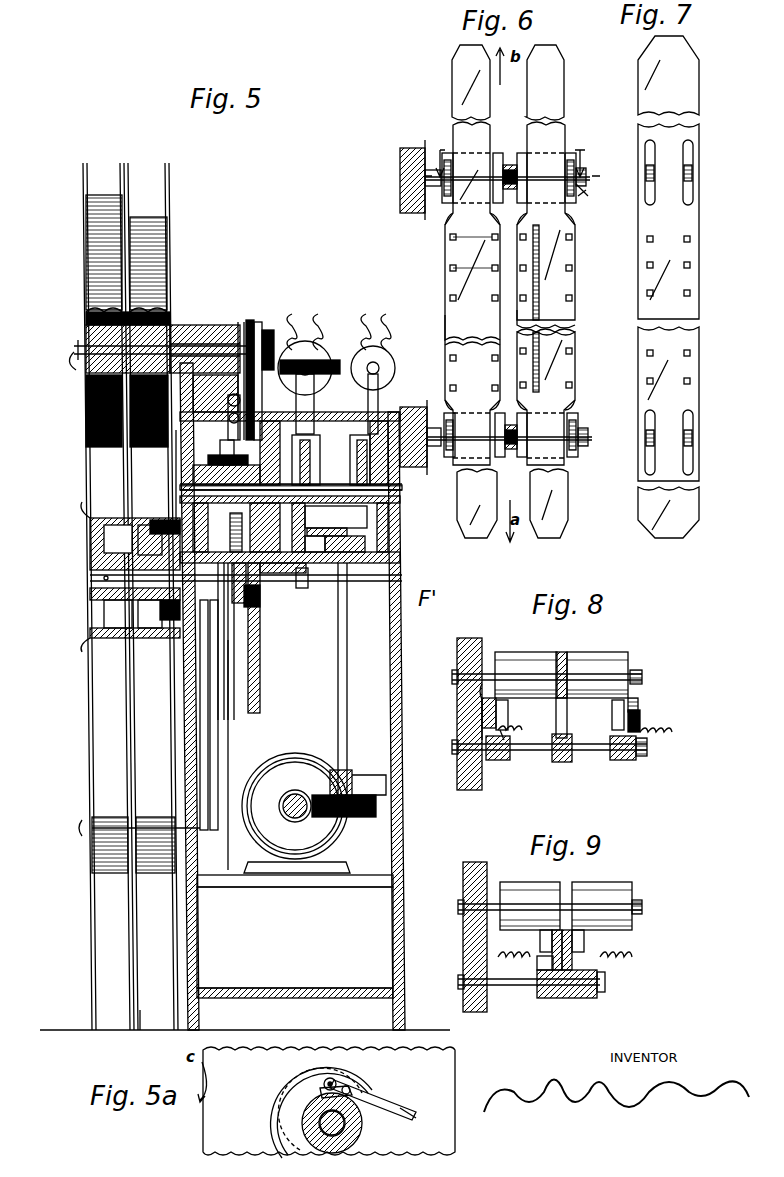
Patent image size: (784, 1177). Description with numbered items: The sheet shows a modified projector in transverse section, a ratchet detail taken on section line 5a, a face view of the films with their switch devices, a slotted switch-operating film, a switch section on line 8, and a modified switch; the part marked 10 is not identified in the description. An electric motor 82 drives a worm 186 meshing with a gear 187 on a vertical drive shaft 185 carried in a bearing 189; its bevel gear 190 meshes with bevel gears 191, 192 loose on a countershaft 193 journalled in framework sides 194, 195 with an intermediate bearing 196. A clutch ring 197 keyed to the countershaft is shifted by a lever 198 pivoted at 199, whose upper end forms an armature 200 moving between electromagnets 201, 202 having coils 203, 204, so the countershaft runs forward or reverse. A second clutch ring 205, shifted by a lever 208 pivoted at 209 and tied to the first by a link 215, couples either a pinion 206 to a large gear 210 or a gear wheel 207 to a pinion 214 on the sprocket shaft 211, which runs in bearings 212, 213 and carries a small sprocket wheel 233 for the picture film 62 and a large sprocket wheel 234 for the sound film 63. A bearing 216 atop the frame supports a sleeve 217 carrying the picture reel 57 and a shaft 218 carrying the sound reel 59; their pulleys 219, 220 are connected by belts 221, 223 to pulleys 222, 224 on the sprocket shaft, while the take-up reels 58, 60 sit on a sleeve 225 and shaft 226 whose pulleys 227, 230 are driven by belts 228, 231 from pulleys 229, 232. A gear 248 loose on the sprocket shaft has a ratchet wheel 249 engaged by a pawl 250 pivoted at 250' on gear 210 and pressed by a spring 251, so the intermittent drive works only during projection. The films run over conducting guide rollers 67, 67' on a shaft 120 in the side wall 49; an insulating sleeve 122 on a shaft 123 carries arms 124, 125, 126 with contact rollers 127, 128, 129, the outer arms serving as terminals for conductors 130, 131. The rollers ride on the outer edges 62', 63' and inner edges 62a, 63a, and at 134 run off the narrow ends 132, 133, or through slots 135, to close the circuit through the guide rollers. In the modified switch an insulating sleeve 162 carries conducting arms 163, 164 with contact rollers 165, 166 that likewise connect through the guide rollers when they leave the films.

In FIG. 5, the section line 5a is at (258, 634).
In FIG. 6, the section line 8 is at (512, 155).
In FIG. 5, the frame plate 10 is at (178, 444).
In FIG. 6, the side wall 49 is at (400, 148).
In FIG. 8, the side wall 49 is at (458, 638).
In FIG. 9, the side wall 49 is at (463, 870).
In FIG. 5, the picture reel 57 is at (170, 200).
In FIG. 5, the take-up picture reel 58 is at (170, 1010).
In FIG. 5, the sound reel 59 is at (84, 181).
In FIG. 5, the take-up sound reel 60 is at (93, 952).
In FIG. 5, the picture film 62 is at (164, 332).
In FIG. 6, the picture film 62 is at (456, 293).
In FIG. 8, the picture film 62 is at (518, 720).
In FIG. 9, the picture film 62 is at (526, 950).
In FIG. 6, the inner edge of picture film 62a is at (424, 312).
In FIG. 6, the outer edge of picture film 62' is at (460, 345).
In FIG. 5, the sound film 63 is at (82, 321).
In FIG. 6, the sound film 63 is at (562, 293).
In FIG. 8, the sound film 63 is at (607, 715).
In FIG. 9, the sound film 63 is at (625, 943).
In FIG. 6, the outer edge of sound film 63' is at (564, 309).
In FIG. 6, the inner edge of sound film 63a is at (572, 340).
In FIG. 6, the guide rollers 67 is at (433, 285).
In FIG. 8, the guide rollers 67 is at (526, 665).
In FIG. 9, the guide rollers 67 is at (550, 896).
In FIG. 6, the guide rollers 67' is at (594, 287).
In FIG. 8, the guide rollers 67' is at (597, 665).
In FIG. 9, the guide rollers 67' is at (618, 892).
In FIG. 5, the electric motor 82 is at (296, 813).
In FIG. 6, the shaft 120 is at (402, 178).
In FIG. 8, the shaft 120 is at (460, 672).
In FIG. 8, the insulating sleeve 122 is at (618, 760).
In FIG. 8, the shaft 123 is at (470, 744).
In FIG. 9, the shaft 123 is at (574, 998).
In FIG. 6, the outer arm 124 is at (425, 170).
In FIG. 8, the outer arm 124 is at (482, 706).
In FIG. 6, the middle arm 125 is at (504, 153).
In FIG. 8, the middle arm 125 is at (562, 698).
In FIG. 6, the outer arm 126 is at (580, 168).
In FIG. 8, the outer arm 126 is at (640, 714).
In FIG. 6, the contact roller 127 is at (440, 186).
In FIG. 8, the contact roller 127 is at (480, 690).
In FIG. 6, the contact rollers 128 is at (512, 184).
In FIG. 8, the contact rollers 128 is at (556, 762).
In FIG. 6, the contact roller 129 is at (580, 420).
In FIG. 8, the contact roller 129 is at (640, 700).
In FIG. 8, the conductor 130 is at (500, 760).
In FIG. 8, the conductor 131 is at (672, 732).
In FIG. 6, the narrow end portion 132 is at (548, 532).
In FIG. 6, the narrow end portion 133 is at (462, 82).
In FIG. 6, the film edge shoulder 134 is at (445, 222).
In FIG. 7, the longitudinal slots 135 is at (655, 150).
In FIG. 9, the insulating sleeve 162 is at (562, 998).
In FIG. 9, the conducting switch arm 163 is at (598, 960).
In FIG. 9, the conducting switch arm 164 is at (540, 970).
In FIG. 9, the contact roller 165 is at (578, 930).
In FIG. 9, the contact roller 166 is at (548, 930).
In FIG. 5, the vertical drive shaft 185 is at (347, 679).
In FIG. 5, the worm 186 is at (298, 790).
In FIG. 5, the gear 187 is at (376, 808).
In FIG. 5, the bearing 189 is at (352, 770).
In FIG. 5, the bevel gear 190 is at (390, 540).
In FIG. 5, the bevel gear 191 is at (307, 452).
In FIG. 5, the bevel gear 192 is at (367, 514).
In FIG. 5, the countershaft 193 is at (180, 487).
In FIG. 5, the framework side 194 is at (198, 960).
In FIG. 5, the framework side 195 is at (392, 944).
In FIG. 5, the intermediate bearing 196 is at (280, 532).
In FIG. 5, the clutch ring 197 is at (336, 521).
In FIG. 5, the lever 198 is at (350, 445).
In FIG. 5, the pivot 199 is at (378, 396).
In FIG. 5, the magnetic armature 200 is at (312, 356).
In FIG. 5, the electromagnet 201 is at (388, 370).
In FIG. 5, the electromagnet 202 is at (310, 360).
In FIG. 5, the coil 203 is at (382, 346).
In FIG. 5, the coil 204 is at (296, 314).
In FIG. 5, the second clutch ring 205 is at (222, 460).
In FIG. 5, the pinion 206 is at (176, 522).
In FIG. 5, the gear wheel 207 is at (300, 572).
In FIG. 5, the lever 208 is at (228, 400).
In FIG. 5, the pivot 209 is at (215, 393).
In FIG. 5, the large gear 210 is at (234, 665).
In FIG. 5, the sprocket shaft 211 is at (90, 579).
In FIG. 5A, the sprocket shaft 211 is at (300, 1130).
In FIG. 5, the bearing 212 is at (100, 536).
In FIG. 5, the bearing 213 is at (307, 585).
In FIG. 5, the pinion 214 is at (262, 608).
In FIG. 5, the link 215 is at (312, 400).
In FIG. 5, the bearing 216 is at (180, 325).
In FIG. 5, the sleeve 217 is at (210, 325).
In FIG. 5, the shaft 218 is at (74, 346).
In FIG. 5, the grooved pulley 219 is at (240, 322).
In FIG. 5, the pulley 220 is at (250, 320).
In FIG. 5, the driving belt 221 is at (258, 370).
In FIG. 5, the pulley 222 is at (260, 596).
In FIG. 5, the driving belt 223 is at (268, 330).
In FIG. 5, the pulley 224 is at (246, 600).
In FIG. 5, the rotary sleeve 225 is at (148, 868).
In FIG. 5, the rotary shaft 226 is at (100, 838).
In FIG. 5, the grooved pulley 227 is at (216, 860).
In FIG. 5, the driving belt 228 is at (208, 734).
In FIG. 5A, the driving belt 228 is at (404, 1116).
In FIG. 5, the grooved pulley 229 is at (104, 610).
In FIG. 5, the pulley 230 is at (230, 850).
In FIG. 5, the driving belt 231 is at (218, 718).
In FIG. 5A, the driving belt 231 is at (386, 1100).
In FIG. 5, the pulley 232 is at (90, 594).
In FIG. 5A, the pulley 232 is at (312, 1080).
In FIG. 5, the small sprocket wheel 233 is at (138, 614).
In FIG. 5, the large sprocket wheel 234 is at (130, 556).
In FIG. 5, the gear 248 is at (224, 650).
In FIG. 5, the ratchet wheel 249 is at (170, 620).
In FIG. 5A, the ratchet wheel 249 is at (322, 1118).
In FIG. 5, the pawl 250 is at (163, 522).
In FIG. 5A, the pawl 250 is at (290, 1093).
In FIG. 5A, the pivot 250' is at (330, 1061).
In FIG. 5A, the spring 251 is at (348, 1086).